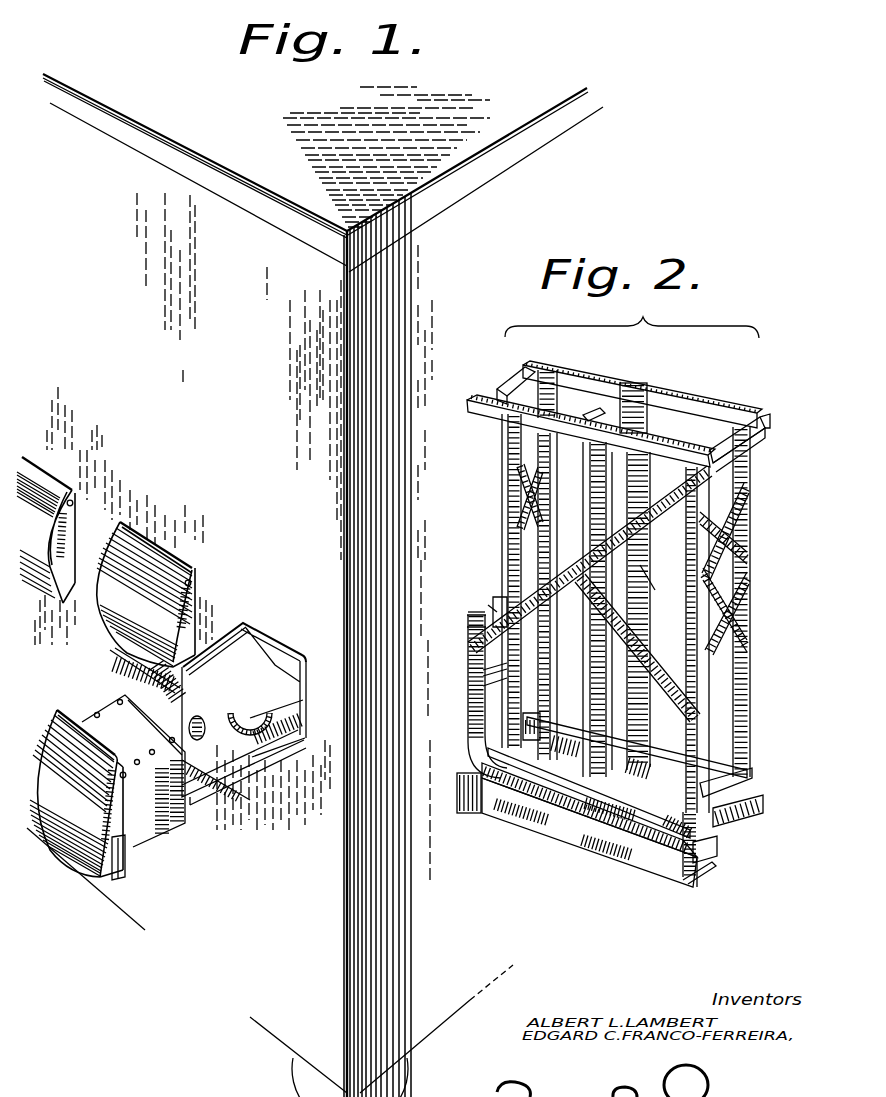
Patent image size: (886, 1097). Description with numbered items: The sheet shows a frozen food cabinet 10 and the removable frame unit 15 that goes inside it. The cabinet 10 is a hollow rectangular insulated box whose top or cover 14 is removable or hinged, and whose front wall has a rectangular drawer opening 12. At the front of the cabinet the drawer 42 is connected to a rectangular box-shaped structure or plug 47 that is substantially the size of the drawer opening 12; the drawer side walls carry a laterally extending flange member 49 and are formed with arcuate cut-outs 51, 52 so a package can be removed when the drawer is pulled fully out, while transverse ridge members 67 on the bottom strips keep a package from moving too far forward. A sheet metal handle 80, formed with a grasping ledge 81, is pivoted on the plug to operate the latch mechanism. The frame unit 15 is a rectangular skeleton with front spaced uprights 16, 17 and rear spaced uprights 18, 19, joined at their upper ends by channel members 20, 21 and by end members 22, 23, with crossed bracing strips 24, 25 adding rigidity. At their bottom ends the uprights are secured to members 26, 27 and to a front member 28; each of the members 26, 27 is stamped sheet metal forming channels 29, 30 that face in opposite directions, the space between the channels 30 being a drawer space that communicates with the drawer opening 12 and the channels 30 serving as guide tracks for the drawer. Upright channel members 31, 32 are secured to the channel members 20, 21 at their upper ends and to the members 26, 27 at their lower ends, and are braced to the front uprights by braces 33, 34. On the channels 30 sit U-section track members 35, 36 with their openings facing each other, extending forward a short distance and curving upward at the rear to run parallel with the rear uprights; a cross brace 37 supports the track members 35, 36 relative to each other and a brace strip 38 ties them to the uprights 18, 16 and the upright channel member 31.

In FIG. 1, the frozen food cabinet 10 is at (315, 585).
In FIG. 1, the top or cover 14 is at (386, 157).
In FIG. 1, the drawer opening 12 is at (240, 617).
In FIG. 1, the transverse ridge members 67 is at (196, 716).
In FIG. 1, the arcuate cut-out 51 is at (165, 676).
In FIG. 1, the arcuate cut-out 52 is at (217, 755).
In FIG. 1, the drawer 42 is at (268, 722).
In FIG. 1, the flange member 49 is at (252, 763).
In FIG. 1, the box-shaped structure or plug 47 is at (133, 783).
In FIG. 1, the handle 80 is at (77, 823).
In FIG. 1, the grasping ledge 81 is at (107, 878).
In FIG. 2, the frame unit 15 is at (632, 318).
In FIG. 2, the front upright 16 is at (698, 676).
In FIG. 2, the front upright 17 is at (746, 639).
In FIG. 2, the rear upright 18 is at (506, 540).
In FIG. 2, the rear upright 19 is at (540, 453).
In FIG. 2, the channel member 20 is at (478, 410).
In FIG. 2, the channel member 21 is at (713, 404).
In FIG. 2, the end member 22 is at (754, 428).
In FIG. 2, the end member 23 is at (512, 386).
In FIG. 2, the crossed bracing strip 24 is at (745, 551).
In FIG. 2, the crossed bracing strip 25 is at (520, 502).
In FIG. 2, the bottom member 26 is at (533, 822).
In FIG. 2, the bottom member 27 is at (644, 774).
In FIG. 2, the front member 28 is at (742, 796).
In FIG. 2, the channel 29 is at (693, 825).
In FIG. 2, the channel 30 is at (695, 881).
In FIG. 2, the upright channel member 31 is at (597, 412).
In FIG. 2, the upright channel member 32 is at (632, 395).
In FIG. 2, the brace 33 is at (690, 718).
In FIG. 2, the brace 34 is at (660, 582).
In FIG. 2, the track member 35 is at (483, 613).
In FIG. 2, the track member 36 is at (497, 597).
In FIG. 2, the cross brace 37 is at (480, 688).
In FIG. 2, the brace strip 38 is at (497, 610).